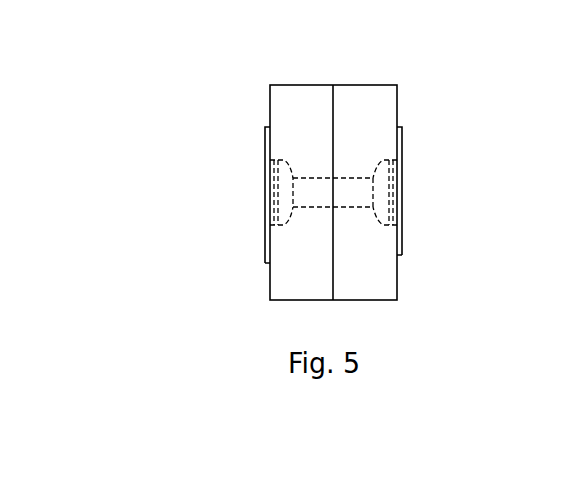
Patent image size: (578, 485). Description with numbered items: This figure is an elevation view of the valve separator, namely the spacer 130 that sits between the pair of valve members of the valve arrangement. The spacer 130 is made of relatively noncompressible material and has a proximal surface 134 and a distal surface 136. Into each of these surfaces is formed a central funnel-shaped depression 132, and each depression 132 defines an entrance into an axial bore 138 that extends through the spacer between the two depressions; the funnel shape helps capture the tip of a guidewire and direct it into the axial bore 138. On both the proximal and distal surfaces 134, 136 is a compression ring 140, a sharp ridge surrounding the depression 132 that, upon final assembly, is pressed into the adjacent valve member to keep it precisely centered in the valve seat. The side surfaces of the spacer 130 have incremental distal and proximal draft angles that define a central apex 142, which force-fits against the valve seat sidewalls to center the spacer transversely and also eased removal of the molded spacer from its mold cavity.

The spacer 130 is at (268, 93).
The central funnel-shaped depression 132 is at (270, 234).
The proximal surface 134 is at (267, 112).
The distal surface 136 is at (399, 109).
The axial bore 138 is at (359, 197).
The compression ring 140 is at (267, 264).
The central apex 142 is at (341, 83).